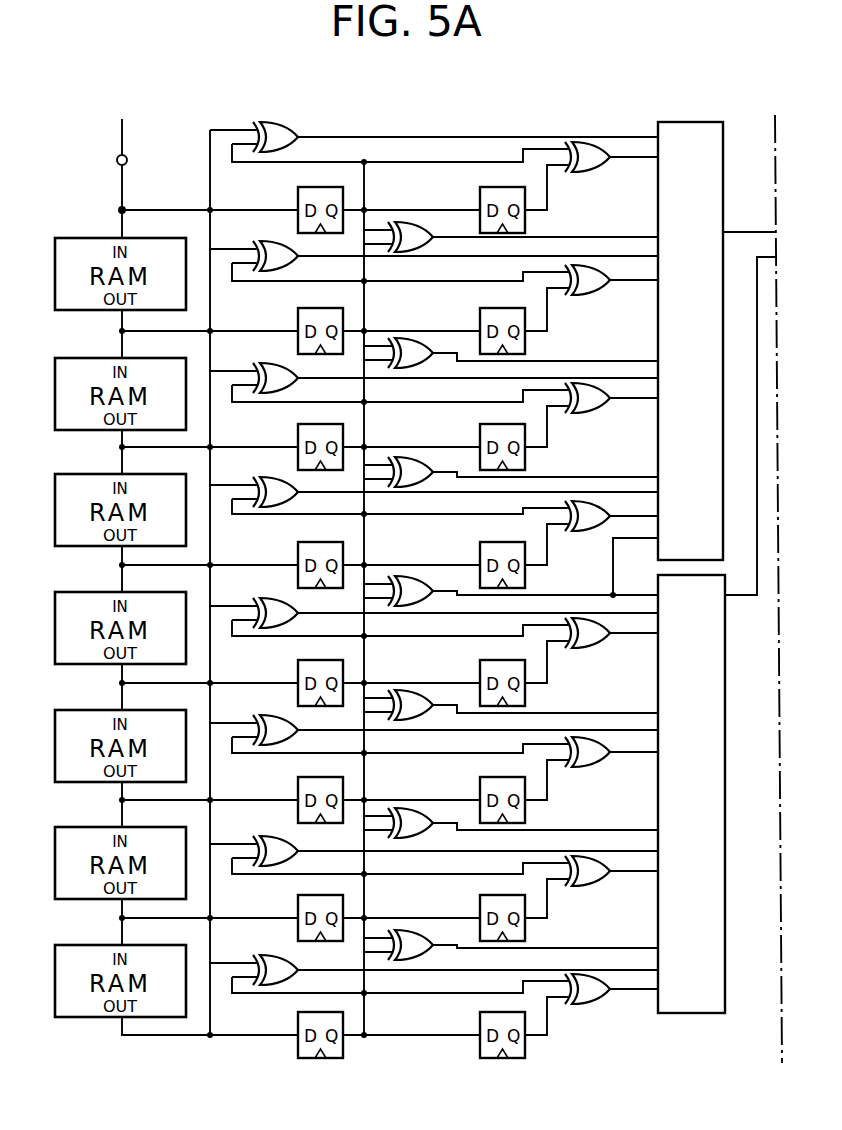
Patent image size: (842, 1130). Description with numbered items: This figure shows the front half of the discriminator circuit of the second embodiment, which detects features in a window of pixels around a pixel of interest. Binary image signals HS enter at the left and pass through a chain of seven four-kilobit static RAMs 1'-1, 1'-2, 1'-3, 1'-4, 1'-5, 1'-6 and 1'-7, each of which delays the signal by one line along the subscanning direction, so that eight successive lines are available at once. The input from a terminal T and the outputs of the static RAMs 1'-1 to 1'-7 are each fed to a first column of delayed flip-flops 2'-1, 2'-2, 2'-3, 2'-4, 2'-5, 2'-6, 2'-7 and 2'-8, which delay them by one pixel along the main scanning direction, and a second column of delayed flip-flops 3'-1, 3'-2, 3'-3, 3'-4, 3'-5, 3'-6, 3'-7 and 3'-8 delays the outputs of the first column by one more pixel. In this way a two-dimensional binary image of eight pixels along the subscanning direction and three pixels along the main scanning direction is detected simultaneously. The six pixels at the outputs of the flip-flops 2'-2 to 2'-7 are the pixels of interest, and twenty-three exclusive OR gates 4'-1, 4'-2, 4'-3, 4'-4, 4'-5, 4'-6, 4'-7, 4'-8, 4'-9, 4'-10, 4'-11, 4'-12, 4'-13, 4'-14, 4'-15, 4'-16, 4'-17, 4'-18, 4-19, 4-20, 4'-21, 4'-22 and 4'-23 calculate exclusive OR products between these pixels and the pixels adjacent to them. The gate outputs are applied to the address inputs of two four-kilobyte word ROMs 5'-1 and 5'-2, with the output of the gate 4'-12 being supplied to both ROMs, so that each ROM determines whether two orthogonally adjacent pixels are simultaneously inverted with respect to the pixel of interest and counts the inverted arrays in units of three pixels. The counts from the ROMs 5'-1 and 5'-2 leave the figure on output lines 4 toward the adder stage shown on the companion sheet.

The terminal T is at (120, 131).
The binary signals HS is at (122, 182).
The static RAM 1'-1 is at (120, 244).
The static RAM 1'-2 is at (113, 378).
The static RAM 1'-3 is at (113, 494).
The static RAM 1'-4 is at (113, 612).
The static RAM 1'-5 is at (113, 730).
The static RAM 1'-6 is at (113, 847).
The static RAM 1'-7 is at (113, 965).
The delayed flip-flop 2'-1 is at (280, 206).
The delayed flip-flop 2'-2 is at (280, 327).
The delayed flip-flop 2'-3 is at (280, 443).
The delayed flip-flop 2'-4 is at (280, 561).
The delayed flip-flop 2'-5 is at (280, 679).
The delayed flip-flop 2'-6 is at (280, 796).
The delayed flip-flop 2'-7 is at (280, 914).
The delayed flip-flop 2'-8 is at (318, 1063).
The delayed flip-flop 3'-1 is at (546, 210).
The delayed flip-flop 3'-2 is at (540, 335).
The delayed flip-flop 3'-3 is at (540, 451).
The delayed flip-flop 3'-4 is at (482, 556).
The delayed flip-flop 3'-5 is at (540, 685).
The delayed flip-flop 3'-6 is at (540, 801).
The delayed flip-flop 3'-7 is at (540, 919).
The delayed flip-flop 3'-8 is at (504, 1062).
The exclusive OR gate 4'-1 is at (247, 119).
The exclusive OR gate 4'-2 is at (247, 245).
The exclusive OR gate 4'-3 is at (247, 367).
The exclusive OR gate 4'-4 is at (247, 481).
The exclusive OR gate 4'-5 is at (247, 602).
The exclusive OR gate 4'-6 is at (247, 719).
The exclusive OR gate 4'-7 is at (247, 840).
The exclusive OR gate 4'-8 is at (247, 959).
The exclusive OR gate 4'-9 is at (409, 924).
The exclusive OR gate 4'-10 is at (411, 802).
The exclusive OR gate 4'-11 is at (411, 684).
The exclusive OR gate 4'-12 is at (411, 570).
The exclusive OR gate 4'-13 is at (411, 451).
The exclusive OR gate 4'-14 is at (411, 332).
The exclusive OR gate 4'-15 is at (411, 216).
The exclusive OR gate 4'-16 is at (610, 176).
The exclusive OR gate 4'-17 is at (610, 299).
The exclusive OR gate 4'-18 is at (610, 417).
The exclusive OR gate 4-19 is at (584, 534).
The exclusive OR gate 4-20 is at (592, 648).
The exclusive OR gate 4'-21 is at (610, 771).
The exclusive OR gate 4'-22 is at (610, 890).
The exclusive OR gate 4'-23 is at (600, 1020).
The ROM 5'-1 is at (713, 320).
The ROM 5'-2 is at (694, 833).
The output line 4 is at (749, 223).